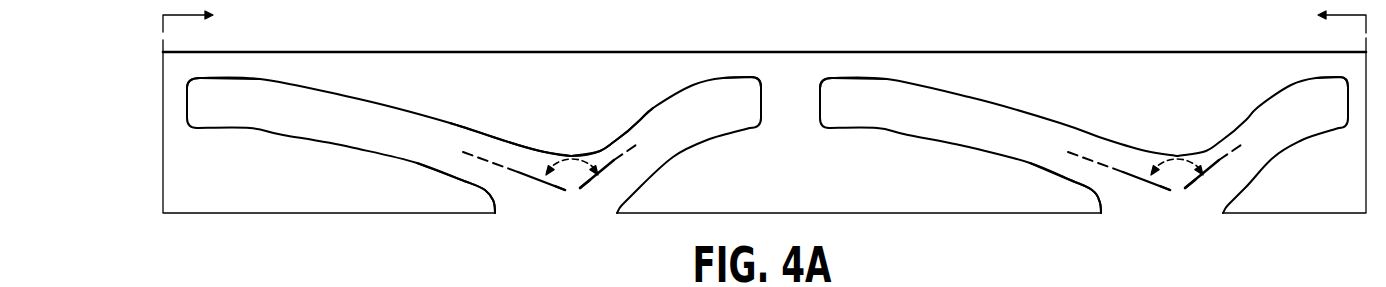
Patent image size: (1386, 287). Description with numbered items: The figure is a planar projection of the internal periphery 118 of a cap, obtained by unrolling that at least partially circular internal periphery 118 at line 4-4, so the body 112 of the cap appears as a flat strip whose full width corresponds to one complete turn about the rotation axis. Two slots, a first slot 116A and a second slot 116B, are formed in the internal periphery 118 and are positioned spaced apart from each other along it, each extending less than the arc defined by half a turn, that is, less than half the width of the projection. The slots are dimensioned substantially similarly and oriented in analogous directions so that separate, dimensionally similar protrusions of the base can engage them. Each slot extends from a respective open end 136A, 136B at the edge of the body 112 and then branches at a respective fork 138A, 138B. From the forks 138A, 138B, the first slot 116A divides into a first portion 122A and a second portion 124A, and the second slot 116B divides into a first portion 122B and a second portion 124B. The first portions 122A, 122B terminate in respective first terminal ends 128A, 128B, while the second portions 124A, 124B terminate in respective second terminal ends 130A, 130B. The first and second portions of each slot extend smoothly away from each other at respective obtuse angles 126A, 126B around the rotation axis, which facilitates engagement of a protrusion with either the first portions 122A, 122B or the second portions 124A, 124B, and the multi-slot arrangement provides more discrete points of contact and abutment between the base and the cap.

The line 4- 4 is at (764, 24).
The body 112 is at (163, 182).
The first slot 116A is at (483, 193).
The second slot 116B is at (1093, 193).
The internal periphery 118 is at (580, 96).
The first portion 122A is at (292, 118).
The first portion 122B is at (940, 121).
The second portion 124A is at (700, 134).
The second portion 124B is at (1316, 134).
The obtuse angle 126A is at (563, 153).
The obtuse angle 126B is at (1176, 153).
The first terminal end 128A is at (212, 78).
The first terminal end 128B is at (843, 78).
The second terminal end 130A is at (735, 77).
The second terminal end 130B is at (1323, 78).
The open end 136A is at (547, 225).
The open end 136B is at (1108, 225).
The fork 138A is at (571, 200).
The fork 138B is at (1177, 200).